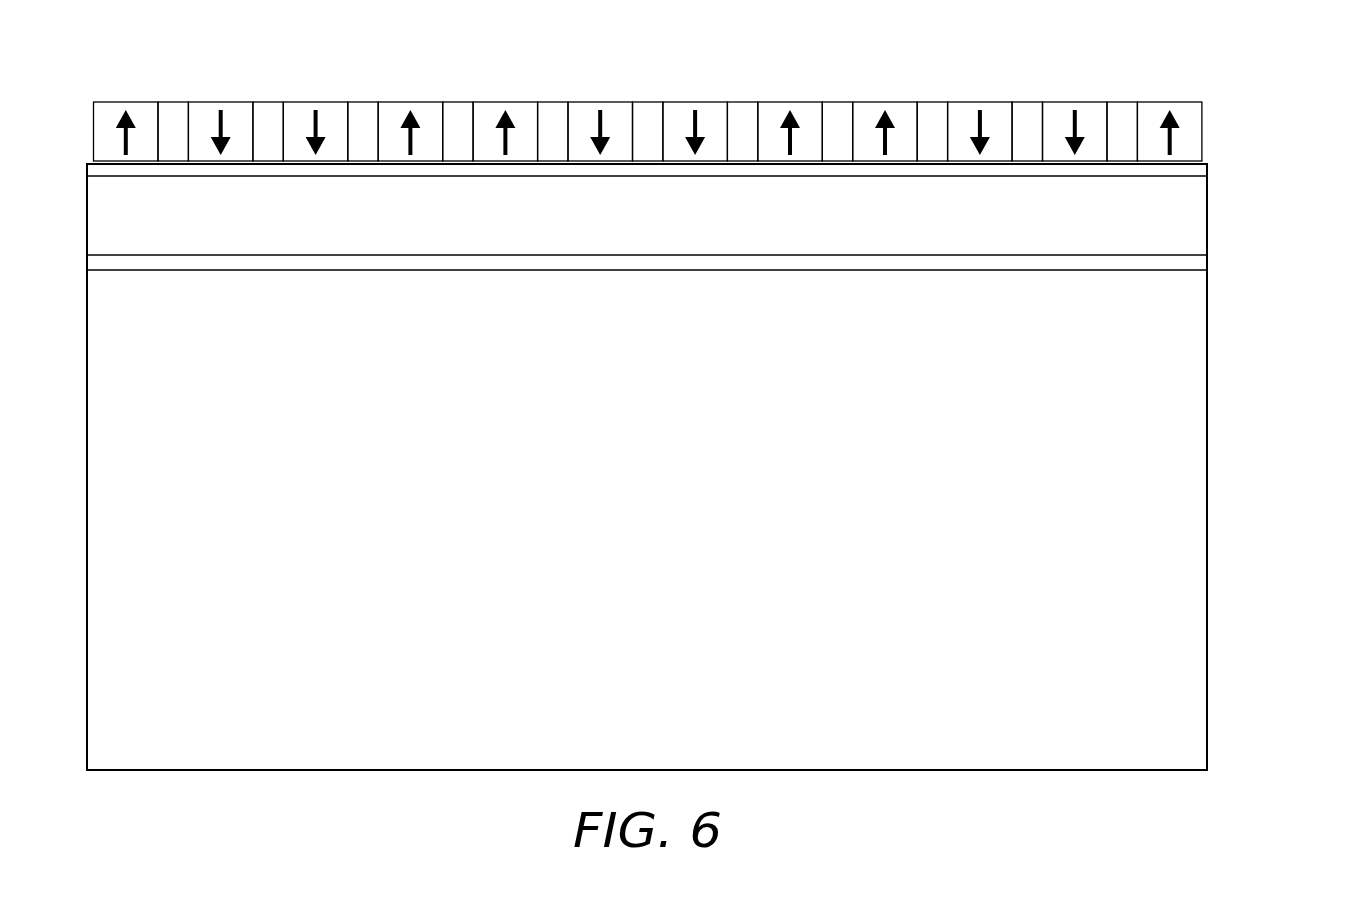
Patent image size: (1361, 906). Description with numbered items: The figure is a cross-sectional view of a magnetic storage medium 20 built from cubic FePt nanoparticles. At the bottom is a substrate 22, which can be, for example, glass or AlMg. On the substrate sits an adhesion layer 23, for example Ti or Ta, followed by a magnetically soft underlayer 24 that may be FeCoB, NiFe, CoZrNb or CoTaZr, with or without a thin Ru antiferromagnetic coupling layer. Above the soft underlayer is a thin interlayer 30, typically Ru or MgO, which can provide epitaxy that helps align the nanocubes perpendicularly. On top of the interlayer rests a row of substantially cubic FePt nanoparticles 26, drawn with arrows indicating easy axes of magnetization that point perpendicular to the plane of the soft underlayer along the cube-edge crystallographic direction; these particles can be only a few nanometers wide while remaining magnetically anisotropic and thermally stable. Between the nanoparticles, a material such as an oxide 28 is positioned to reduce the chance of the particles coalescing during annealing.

The magnetic storage medium 20 is at (723, 84).
The substrate 22 is at (1168, 428).
The adhesion layer 23 is at (1200, 263).
The magnetically soft underlayer 24 is at (1175, 218).
The cubic FePt nanoparticles 26 is at (493, 102).
The oxide 28 is at (1120, 102).
The interlayer 30 is at (1185, 167).